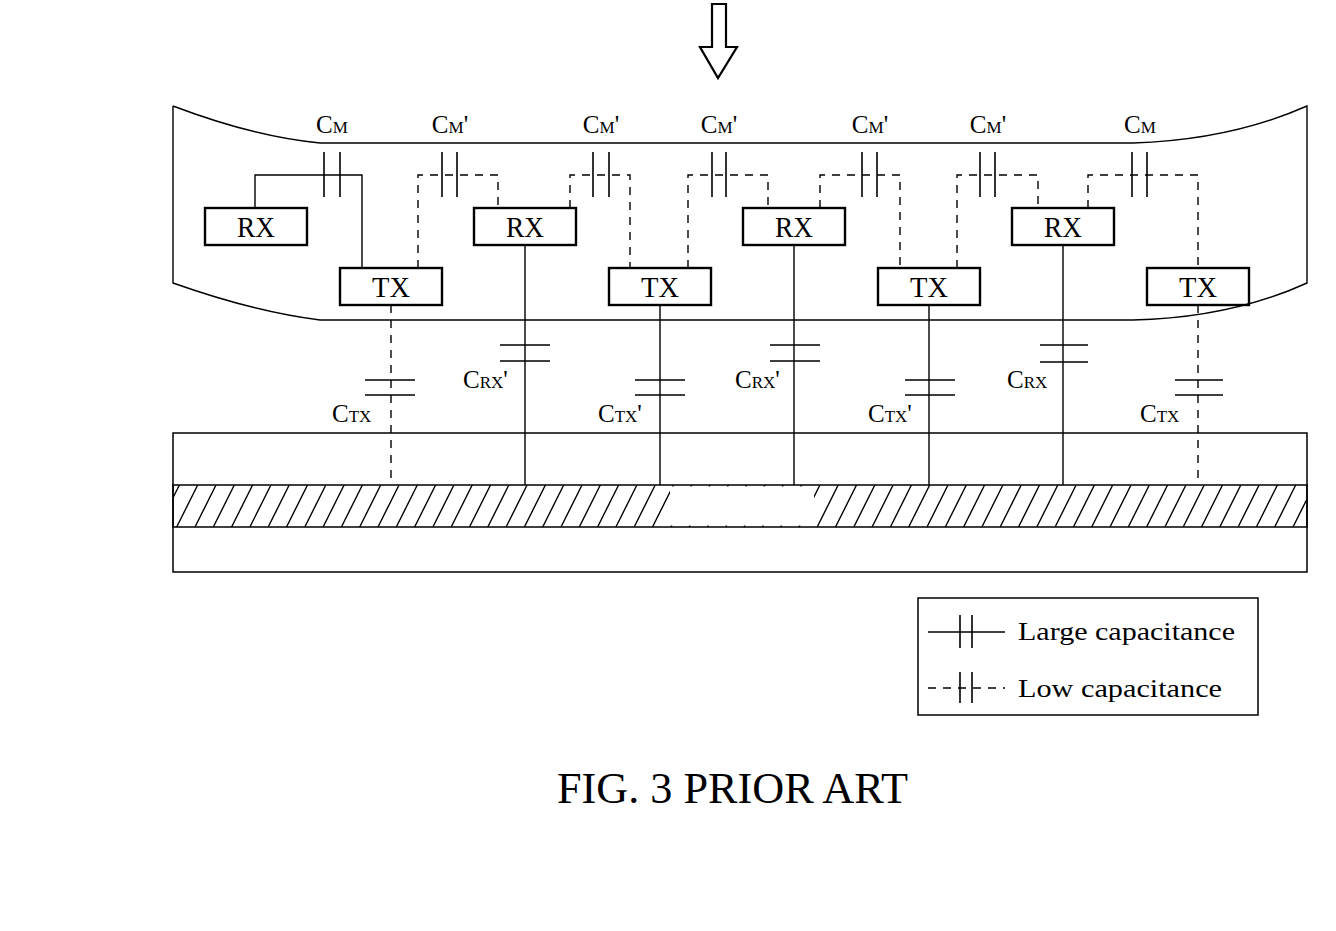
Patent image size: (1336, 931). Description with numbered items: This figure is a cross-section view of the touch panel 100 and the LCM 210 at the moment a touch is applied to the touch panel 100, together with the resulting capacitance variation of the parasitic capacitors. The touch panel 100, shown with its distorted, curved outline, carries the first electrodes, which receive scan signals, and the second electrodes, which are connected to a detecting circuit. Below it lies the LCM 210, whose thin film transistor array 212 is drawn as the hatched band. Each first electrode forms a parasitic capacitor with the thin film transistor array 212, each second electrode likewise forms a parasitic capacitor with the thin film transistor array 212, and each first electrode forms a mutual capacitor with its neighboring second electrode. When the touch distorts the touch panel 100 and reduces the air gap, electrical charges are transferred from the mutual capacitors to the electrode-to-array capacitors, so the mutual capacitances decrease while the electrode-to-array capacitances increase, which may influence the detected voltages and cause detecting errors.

The touch panel 100 is at (210, 170).
The LCM 210 is at (480, 548).
The thin film transistor (TFT) array 212 is at (585, 525).